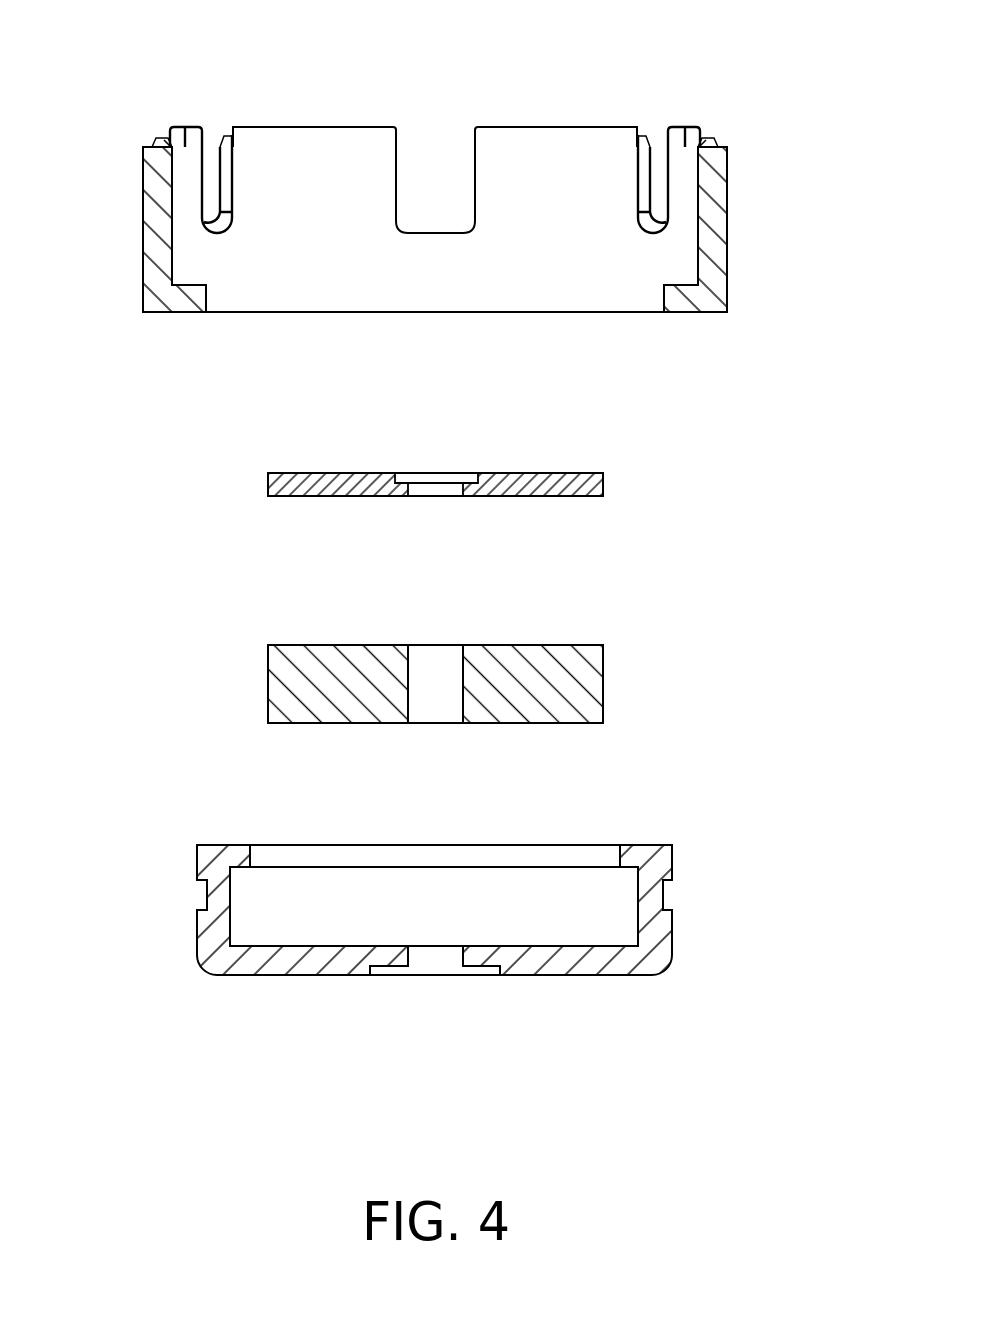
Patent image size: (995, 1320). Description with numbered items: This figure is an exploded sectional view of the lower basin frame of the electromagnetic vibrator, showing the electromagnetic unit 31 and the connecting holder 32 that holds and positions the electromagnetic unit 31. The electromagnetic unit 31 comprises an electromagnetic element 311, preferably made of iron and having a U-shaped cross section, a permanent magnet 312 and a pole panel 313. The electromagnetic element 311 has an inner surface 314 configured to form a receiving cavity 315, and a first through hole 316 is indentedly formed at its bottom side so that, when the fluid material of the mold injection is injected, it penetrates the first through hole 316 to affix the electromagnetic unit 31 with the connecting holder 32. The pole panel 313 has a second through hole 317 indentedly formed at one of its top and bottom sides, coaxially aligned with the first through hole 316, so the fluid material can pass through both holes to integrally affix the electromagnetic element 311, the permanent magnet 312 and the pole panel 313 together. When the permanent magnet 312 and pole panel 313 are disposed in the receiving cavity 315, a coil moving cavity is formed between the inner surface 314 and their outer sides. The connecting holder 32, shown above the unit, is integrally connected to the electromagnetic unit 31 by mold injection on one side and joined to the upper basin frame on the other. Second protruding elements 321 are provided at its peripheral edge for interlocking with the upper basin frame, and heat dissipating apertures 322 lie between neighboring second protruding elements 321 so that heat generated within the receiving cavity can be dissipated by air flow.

The electromagnetic unit 31 is at (459, 922).
The electromagnetic element 311 is at (660, 943).
The permanent magnet 312 is at (281, 667).
The pole panel 313 is at (479, 436).
The inner surface 314 is at (225, 894).
The receiving cavity 315 is at (246, 883).
The first through hole 316 is at (441, 970).
The second through hole 317 is at (428, 477).
The connecting holder 32 is at (448, 165).
The second protruding elements 321 is at (176, 126).
The heat dissipating apertures 322 is at (205, 208).